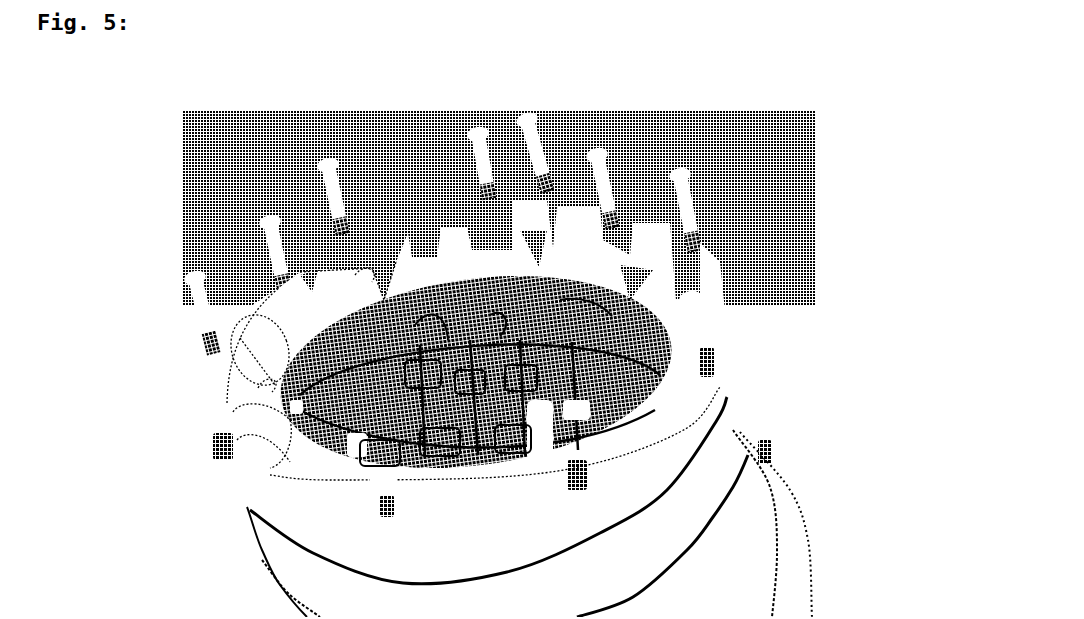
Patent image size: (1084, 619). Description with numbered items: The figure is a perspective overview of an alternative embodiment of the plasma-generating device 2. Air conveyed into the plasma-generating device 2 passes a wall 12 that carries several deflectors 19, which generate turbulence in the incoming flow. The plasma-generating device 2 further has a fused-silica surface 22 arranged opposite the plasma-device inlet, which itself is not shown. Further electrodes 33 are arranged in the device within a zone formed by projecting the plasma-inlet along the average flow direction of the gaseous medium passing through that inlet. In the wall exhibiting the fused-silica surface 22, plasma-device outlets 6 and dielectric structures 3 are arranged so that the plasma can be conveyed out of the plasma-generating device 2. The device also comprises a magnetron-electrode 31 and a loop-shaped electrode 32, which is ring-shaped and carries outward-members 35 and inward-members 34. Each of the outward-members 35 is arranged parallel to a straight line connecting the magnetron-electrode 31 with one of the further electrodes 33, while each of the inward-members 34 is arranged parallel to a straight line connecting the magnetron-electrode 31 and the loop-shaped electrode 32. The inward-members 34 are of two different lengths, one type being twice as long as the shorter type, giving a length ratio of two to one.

The plasma-generating device 2 is at (480, 100).
The dielectric structures 3 is at (350, 469).
The plasma-device outlets 6 is at (510, 440).
The wall 12 is at (322, 265).
The deflectors 19 is at (545, 222).
The fused-silica surface 22 is at (583, 313).
The magnetron-electrode 31 is at (470, 382).
The loop-shaped electrode 32 is at (523, 377).
The further electrodes 33 is at (275, 385).
The inward-members 34 is at (470, 380).
The outward-members 35 is at (500, 325).